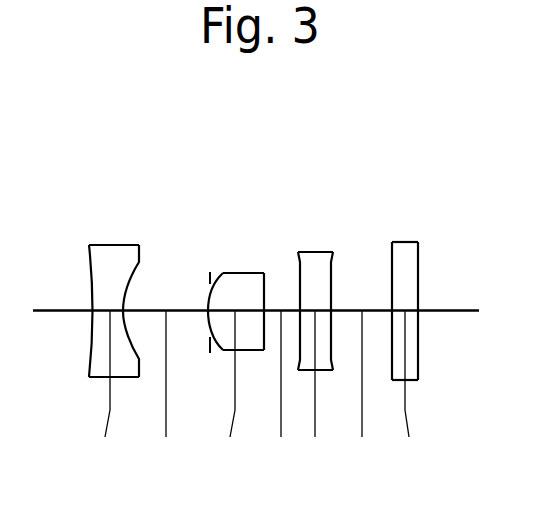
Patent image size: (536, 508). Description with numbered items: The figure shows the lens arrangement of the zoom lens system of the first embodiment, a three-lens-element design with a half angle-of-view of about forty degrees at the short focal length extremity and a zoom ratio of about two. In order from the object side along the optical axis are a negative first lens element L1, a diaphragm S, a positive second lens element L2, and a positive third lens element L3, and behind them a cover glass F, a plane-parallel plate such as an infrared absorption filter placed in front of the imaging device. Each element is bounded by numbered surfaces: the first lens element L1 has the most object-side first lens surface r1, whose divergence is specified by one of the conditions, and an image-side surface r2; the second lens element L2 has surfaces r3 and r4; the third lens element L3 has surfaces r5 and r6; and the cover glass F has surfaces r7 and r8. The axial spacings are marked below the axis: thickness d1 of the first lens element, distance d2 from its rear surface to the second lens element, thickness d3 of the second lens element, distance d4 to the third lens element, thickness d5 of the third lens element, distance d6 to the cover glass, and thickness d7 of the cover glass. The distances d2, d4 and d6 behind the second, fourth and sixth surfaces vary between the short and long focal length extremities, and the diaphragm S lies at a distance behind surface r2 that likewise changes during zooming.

The negative first lens element L1 is at (125, 247).
The positive second lens element L2 is at (241, 233).
The positive third lens element L3 is at (336, 243).
The diaphragm S is at (210, 270).
The cover glass F is at (421, 248).
The first lens surface r1 is at (89, 245).
The second lens surface r2 is at (137, 245).
The third lens surface r3 is at (224, 273).
The fourth lens surface r4 is at (263, 273).
The fifth lens surface r5 is at (298, 252).
The sixth lens surface r6 is at (332, 252).
The seventh surface r7 is at (393, 242).
The eighth surface r8 is at (418, 242).
The lens-element thickness d1 is at (105, 389).
The distance between lens elements d2 is at (166, 389).
The lens-element thickness d3 is at (227, 389).
The distance between lens elements d4 is at (273, 389).
The lens-element thickness d5 is at (315, 389).
The distance between lens elements d6 is at (362, 389).
The lens-element thickness d7 is at (408, 389).